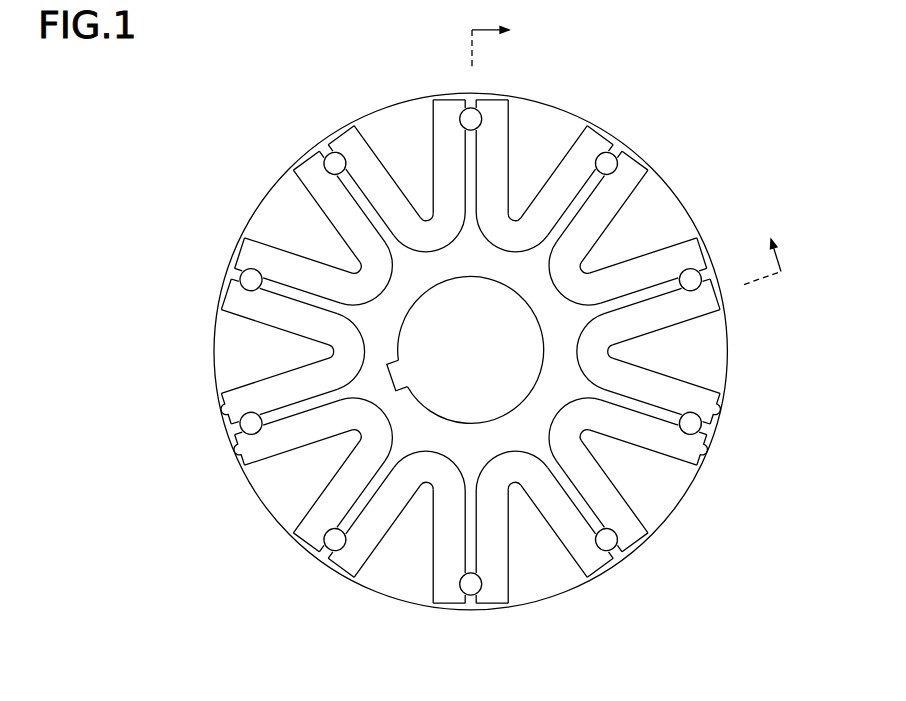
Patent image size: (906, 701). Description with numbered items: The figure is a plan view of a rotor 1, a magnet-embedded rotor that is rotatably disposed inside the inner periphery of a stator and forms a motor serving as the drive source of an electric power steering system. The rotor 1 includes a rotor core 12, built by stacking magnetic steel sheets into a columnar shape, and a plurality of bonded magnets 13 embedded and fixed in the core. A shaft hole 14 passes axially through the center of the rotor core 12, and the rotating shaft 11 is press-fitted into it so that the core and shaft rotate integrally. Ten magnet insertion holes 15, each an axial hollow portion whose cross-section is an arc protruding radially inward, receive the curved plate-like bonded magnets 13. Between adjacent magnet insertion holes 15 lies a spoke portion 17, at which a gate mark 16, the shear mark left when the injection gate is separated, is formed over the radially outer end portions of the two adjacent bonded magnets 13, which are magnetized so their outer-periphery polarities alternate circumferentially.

The rotor 1 is at (712, 82).
The rotating shaft 11 is at (516, 394).
The rotor core 12 is at (551, 106).
The bonded magnet 13 is at (343, 143).
The shaft hole 14 is at (424, 397).
The magnet insertion hole 15 is at (239, 447).
The gate mark 16 is at (246, 271).
The spoke portion 17 is at (274, 290).